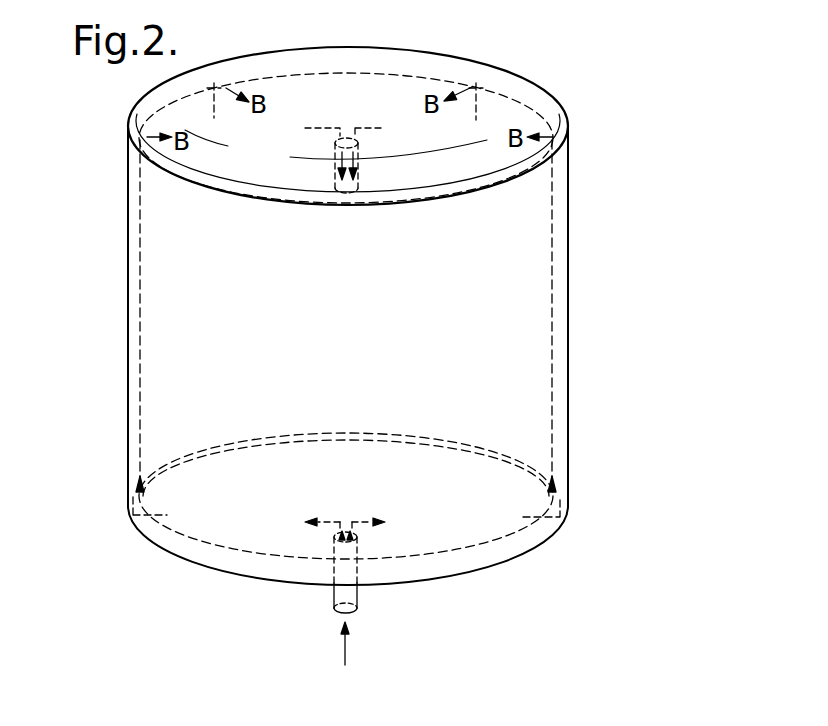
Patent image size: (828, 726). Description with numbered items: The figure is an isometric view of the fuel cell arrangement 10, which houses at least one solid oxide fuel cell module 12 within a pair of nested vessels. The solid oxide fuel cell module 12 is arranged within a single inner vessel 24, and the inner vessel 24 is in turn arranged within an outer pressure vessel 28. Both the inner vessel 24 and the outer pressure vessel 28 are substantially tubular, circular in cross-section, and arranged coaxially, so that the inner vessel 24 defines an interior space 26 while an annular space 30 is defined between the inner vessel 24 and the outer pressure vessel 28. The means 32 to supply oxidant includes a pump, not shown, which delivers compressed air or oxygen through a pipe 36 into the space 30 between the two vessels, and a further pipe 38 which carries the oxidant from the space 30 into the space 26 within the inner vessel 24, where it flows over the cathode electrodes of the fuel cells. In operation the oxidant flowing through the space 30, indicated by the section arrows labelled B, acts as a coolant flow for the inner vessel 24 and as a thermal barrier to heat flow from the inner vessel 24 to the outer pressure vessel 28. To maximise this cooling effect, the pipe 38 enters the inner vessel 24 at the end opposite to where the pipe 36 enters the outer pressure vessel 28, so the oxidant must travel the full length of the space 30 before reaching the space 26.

The fuel cell arrangement 10 is at (613, 170).
The solid oxide fuel cell module 12 is at (518, 320).
The inner vessel 24 is at (552, 250).
The space 26 is at (533, 440).
The outer pressure vessel 28 is at (568, 352).
The space 30 is at (553, 391).
The means to supply oxidant 32 is at (345, 648).
The pipe 36 is at (350, 598).
The pipe 38 is at (357, 168).